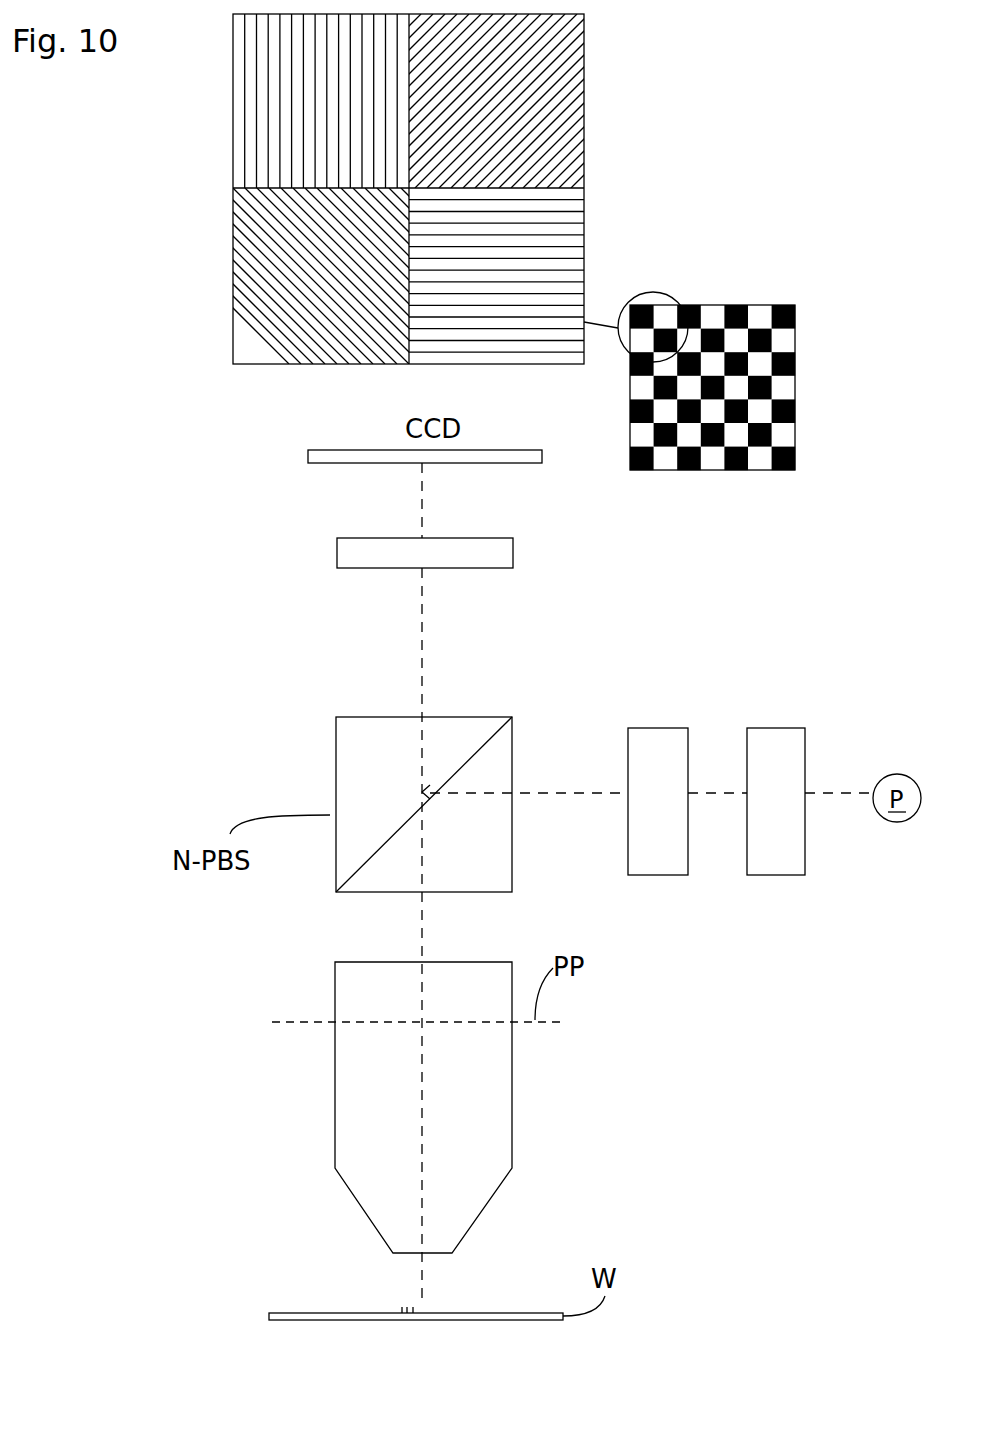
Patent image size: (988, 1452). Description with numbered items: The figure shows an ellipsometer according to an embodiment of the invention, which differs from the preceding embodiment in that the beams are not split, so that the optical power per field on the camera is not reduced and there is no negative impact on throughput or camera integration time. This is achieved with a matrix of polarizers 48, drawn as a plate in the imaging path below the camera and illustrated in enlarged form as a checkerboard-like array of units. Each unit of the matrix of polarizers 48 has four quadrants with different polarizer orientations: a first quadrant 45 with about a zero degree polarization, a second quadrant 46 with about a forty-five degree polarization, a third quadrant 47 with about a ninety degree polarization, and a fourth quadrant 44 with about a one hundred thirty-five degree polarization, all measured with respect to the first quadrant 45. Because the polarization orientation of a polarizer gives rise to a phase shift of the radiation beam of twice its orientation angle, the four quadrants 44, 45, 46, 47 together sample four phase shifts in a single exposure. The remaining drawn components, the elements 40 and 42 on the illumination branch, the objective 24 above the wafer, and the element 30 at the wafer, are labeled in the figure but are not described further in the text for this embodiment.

The fourth quadrant 44 is at (233, 276).
The first quadrant 45 is at (233, 130).
The second quadrant 46 is at (584, 100).
The third quadrant 47 is at (573, 235).
The matrix of polarizers 48 is at (513, 567).
The polarizer 42 is at (673, 813).
The light source optics 40 is at (791, 784).
The objective lens 24 is at (505, 1098).
The target marks on wafer 30 is at (415, 1320).